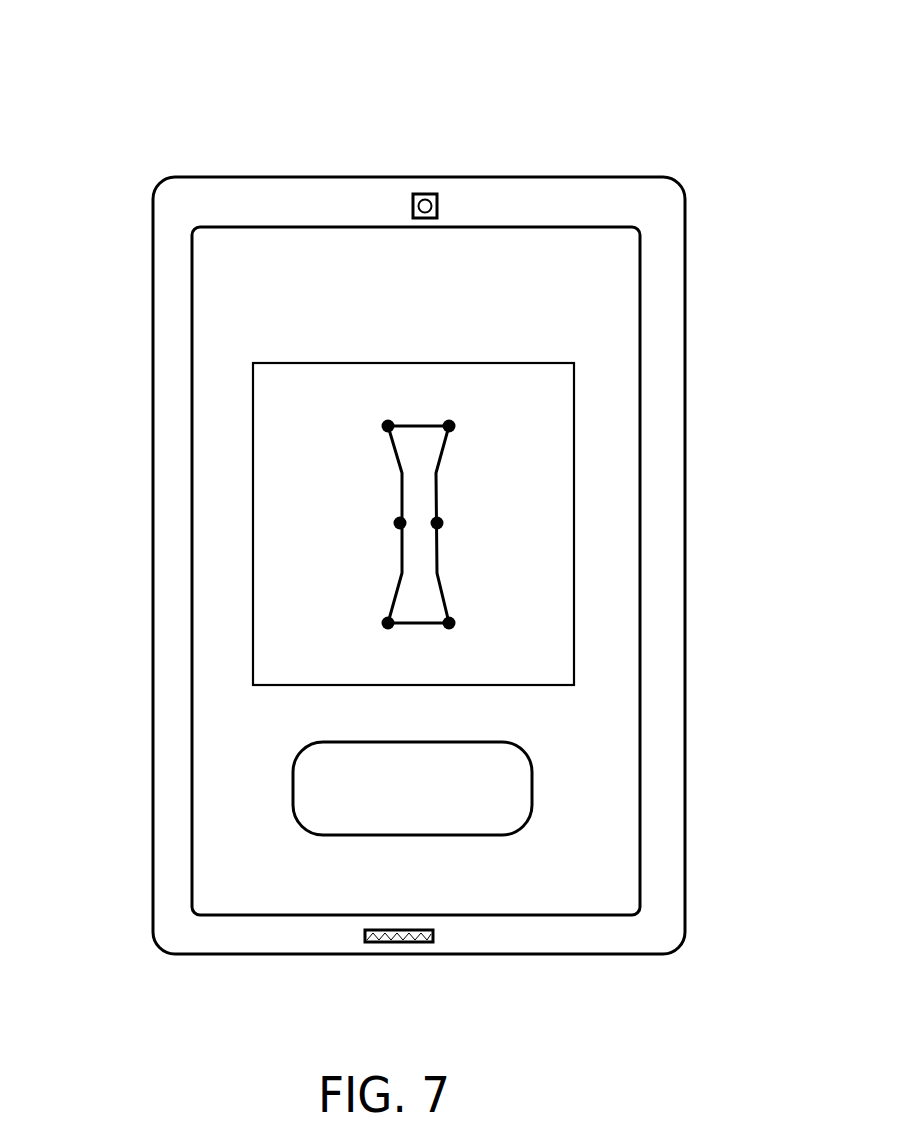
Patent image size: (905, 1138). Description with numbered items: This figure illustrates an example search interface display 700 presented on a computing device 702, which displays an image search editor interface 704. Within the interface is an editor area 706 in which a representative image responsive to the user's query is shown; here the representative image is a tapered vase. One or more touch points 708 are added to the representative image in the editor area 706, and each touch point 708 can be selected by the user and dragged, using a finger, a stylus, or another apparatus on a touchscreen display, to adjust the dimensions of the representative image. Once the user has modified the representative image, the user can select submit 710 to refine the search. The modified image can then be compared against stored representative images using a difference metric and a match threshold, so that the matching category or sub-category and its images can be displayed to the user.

The search interface display 700 is at (789, 109).
The computing device 702 is at (592, 177).
The image search editor interface 704 is at (273, 227).
The editor area 706 is at (253, 627).
The touch points 708 is at (382, 623).
The submit 710 is at (293, 788).